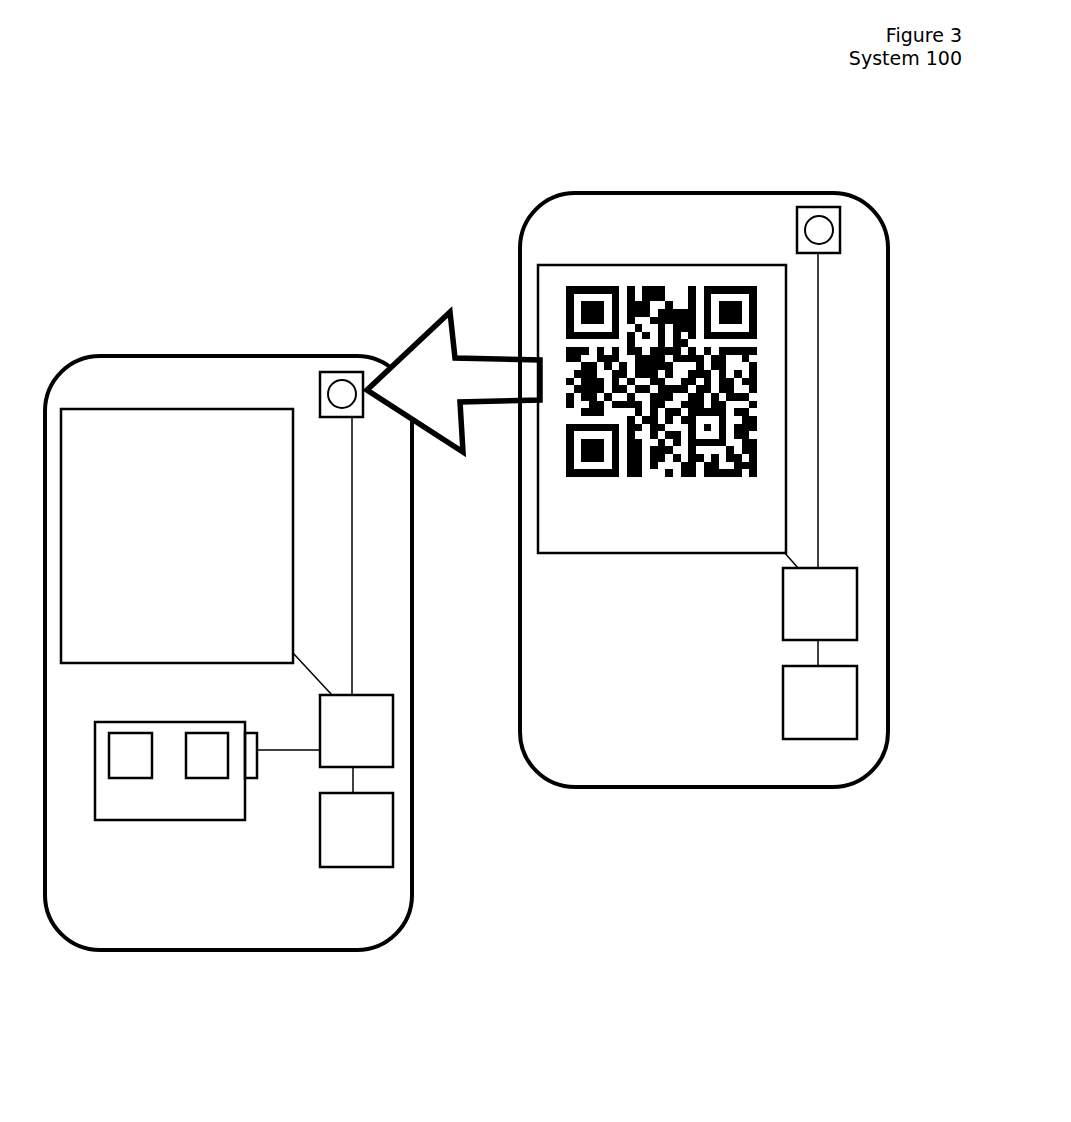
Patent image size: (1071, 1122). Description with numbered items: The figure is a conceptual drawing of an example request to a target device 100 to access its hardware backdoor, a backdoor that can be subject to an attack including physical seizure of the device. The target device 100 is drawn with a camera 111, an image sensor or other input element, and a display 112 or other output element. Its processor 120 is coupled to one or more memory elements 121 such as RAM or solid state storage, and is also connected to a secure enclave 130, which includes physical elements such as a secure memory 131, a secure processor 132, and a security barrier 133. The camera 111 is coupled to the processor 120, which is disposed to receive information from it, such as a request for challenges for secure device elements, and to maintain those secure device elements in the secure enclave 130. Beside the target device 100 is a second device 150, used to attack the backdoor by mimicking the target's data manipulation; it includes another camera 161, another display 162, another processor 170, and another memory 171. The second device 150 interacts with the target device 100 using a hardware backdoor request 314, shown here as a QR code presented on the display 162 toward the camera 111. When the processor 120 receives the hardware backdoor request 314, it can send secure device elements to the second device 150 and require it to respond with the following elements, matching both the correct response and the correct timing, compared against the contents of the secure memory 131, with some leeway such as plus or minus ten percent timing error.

The target device 100 is at (228, 694).
The camera 111 is at (303, 366).
The display 112 is at (177, 523).
The processor 120 is at (386, 698).
The memory elements 121 is at (356, 856).
The secure enclave 130 is at (170, 799).
The secure memory 131 is at (145, 682).
The secure processor 132 is at (210, 708).
The security barrier 133 is at (267, 765).
The second device 150 is at (704, 524).
The camera 161 is at (859, 203).
The display 162 is at (662, 394).
The processor 170 is at (768, 604).
The memory 171 is at (771, 702).
The hardware backdoor request 314 is at (661, 407).